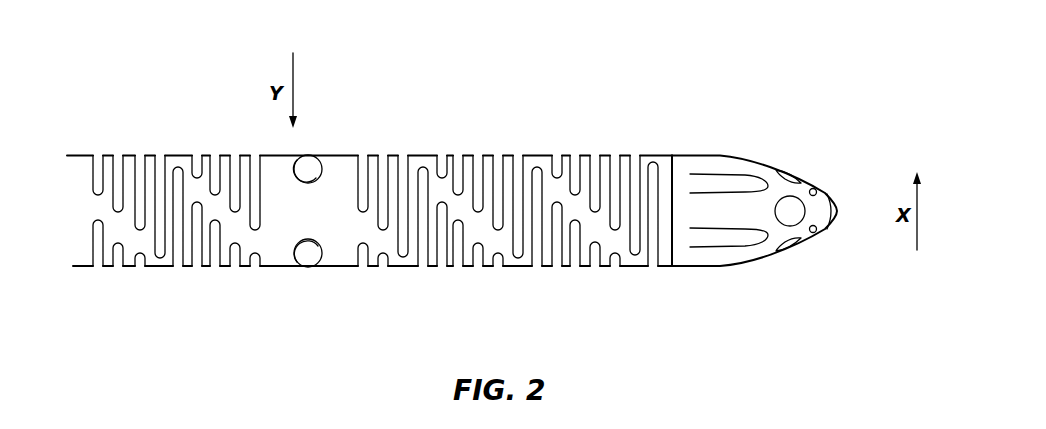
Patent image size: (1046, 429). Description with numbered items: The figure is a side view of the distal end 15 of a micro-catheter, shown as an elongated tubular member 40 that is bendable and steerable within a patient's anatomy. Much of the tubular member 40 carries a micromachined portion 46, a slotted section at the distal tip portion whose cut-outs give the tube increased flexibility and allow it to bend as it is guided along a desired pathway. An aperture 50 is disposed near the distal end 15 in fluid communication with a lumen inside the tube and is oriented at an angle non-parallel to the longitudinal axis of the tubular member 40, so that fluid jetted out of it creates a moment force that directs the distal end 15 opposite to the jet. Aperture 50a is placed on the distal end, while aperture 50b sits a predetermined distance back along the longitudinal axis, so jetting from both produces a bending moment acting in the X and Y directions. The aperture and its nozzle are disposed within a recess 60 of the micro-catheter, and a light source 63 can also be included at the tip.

The elongated tubular member 40 is at (614, 69).
The distal end 15 is at (851, 157).
The micromachined portion 46 is at (517, 155).
The aperture 50 is at (757, 183).
The aperture 50a is at (770, 240).
The aperture 50b is at (312, 165).
The recess 60 is at (748, 240).
The light source 63 is at (820, 187).